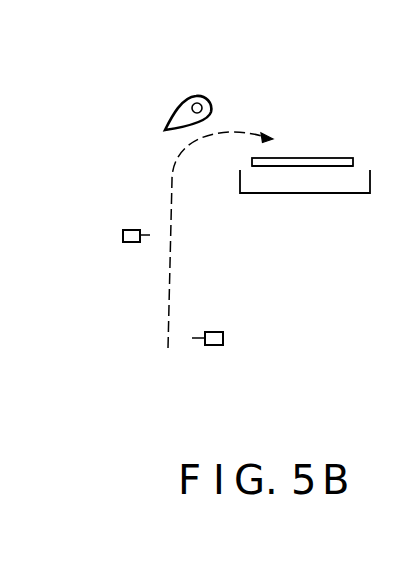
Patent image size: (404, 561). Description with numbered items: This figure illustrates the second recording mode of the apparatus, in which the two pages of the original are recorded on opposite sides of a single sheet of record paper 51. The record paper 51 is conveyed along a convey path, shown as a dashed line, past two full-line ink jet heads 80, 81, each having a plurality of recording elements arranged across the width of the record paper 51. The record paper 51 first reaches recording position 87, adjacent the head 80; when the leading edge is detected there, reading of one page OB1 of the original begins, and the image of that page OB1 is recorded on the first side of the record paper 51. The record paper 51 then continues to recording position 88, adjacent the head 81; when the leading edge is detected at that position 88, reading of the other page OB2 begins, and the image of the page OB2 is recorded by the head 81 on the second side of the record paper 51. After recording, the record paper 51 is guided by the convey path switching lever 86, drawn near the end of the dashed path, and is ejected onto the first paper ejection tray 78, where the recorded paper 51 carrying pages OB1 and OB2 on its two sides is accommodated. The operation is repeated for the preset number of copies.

The convey path switching lever 86 is at (211, 100).
The other page of the original OB2 is at (295, 158).
The record paper 51 is at (327, 163).
The first paper ejection tray 78 is at (312, 195).
The one page of the original OB1 is at (273, 167).
The full-line ink jet head 81 is at (123, 234).
The recording position 88 is at (162, 238).
The recording position 87 is at (177, 340).
The full-line ink jet head 80 is at (223, 337).